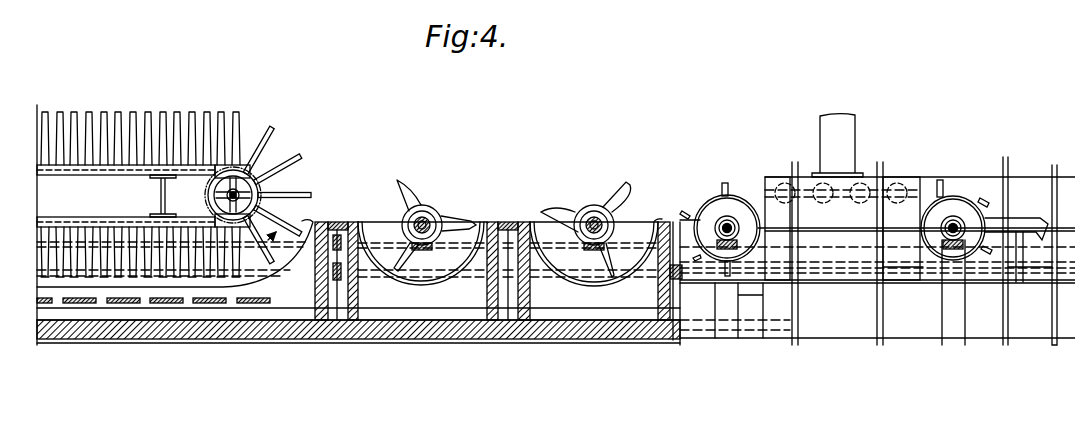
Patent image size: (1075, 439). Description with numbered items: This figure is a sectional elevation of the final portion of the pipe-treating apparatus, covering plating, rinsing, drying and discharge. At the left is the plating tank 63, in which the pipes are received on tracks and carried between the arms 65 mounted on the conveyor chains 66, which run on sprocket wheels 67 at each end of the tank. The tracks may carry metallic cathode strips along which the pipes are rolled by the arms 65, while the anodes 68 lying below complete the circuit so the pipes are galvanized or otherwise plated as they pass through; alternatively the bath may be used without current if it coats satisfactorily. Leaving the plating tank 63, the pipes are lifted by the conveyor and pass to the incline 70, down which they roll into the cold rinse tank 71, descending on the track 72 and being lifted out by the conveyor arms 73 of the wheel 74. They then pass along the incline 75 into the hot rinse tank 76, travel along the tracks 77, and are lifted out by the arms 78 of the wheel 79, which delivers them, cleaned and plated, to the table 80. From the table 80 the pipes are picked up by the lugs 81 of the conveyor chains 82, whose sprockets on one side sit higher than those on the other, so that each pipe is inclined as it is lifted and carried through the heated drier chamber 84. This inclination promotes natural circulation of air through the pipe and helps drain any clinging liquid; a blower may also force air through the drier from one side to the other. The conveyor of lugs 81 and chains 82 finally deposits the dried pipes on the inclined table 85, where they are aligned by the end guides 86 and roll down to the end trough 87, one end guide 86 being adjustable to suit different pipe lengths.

The plating tank 63 is at (301, 214).
The arms 65 is at (190, 111).
The conveyor chains 66 is at (252, 172).
The sprocket wheels 67 is at (171, 196).
The anodes 68 is at (165, 304).
The incline 70 is at (341, 222).
The cold rinse tank 71 is at (382, 222).
The track 72 is at (397, 280).
The conveyor arms 73 is at (450, 213).
The wheel 74 is at (422, 206).
The incline 75 is at (504, 220).
The hot rinse tank 76 is at (542, 222).
The tracks 77 is at (592, 280).
The arms 78 is at (619, 187).
The wheel 79 is at (585, 206).
The table 80 is at (660, 218).
The lugs 81 is at (683, 211).
The conveyor chains 82 is at (730, 172).
The drier chamber 84 is at (773, 179).
The inclined table 85 is at (1023, 235).
The end guides 86 is at (1015, 226).
The end trough 87 is at (1045, 218).